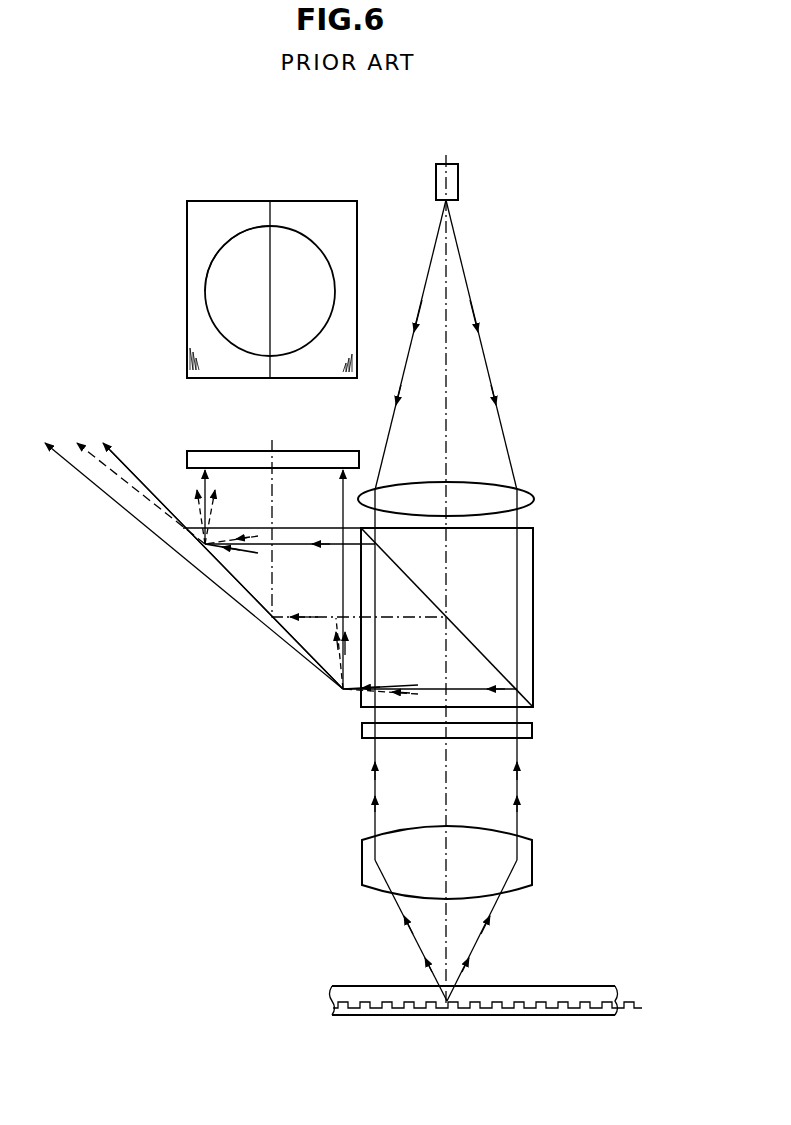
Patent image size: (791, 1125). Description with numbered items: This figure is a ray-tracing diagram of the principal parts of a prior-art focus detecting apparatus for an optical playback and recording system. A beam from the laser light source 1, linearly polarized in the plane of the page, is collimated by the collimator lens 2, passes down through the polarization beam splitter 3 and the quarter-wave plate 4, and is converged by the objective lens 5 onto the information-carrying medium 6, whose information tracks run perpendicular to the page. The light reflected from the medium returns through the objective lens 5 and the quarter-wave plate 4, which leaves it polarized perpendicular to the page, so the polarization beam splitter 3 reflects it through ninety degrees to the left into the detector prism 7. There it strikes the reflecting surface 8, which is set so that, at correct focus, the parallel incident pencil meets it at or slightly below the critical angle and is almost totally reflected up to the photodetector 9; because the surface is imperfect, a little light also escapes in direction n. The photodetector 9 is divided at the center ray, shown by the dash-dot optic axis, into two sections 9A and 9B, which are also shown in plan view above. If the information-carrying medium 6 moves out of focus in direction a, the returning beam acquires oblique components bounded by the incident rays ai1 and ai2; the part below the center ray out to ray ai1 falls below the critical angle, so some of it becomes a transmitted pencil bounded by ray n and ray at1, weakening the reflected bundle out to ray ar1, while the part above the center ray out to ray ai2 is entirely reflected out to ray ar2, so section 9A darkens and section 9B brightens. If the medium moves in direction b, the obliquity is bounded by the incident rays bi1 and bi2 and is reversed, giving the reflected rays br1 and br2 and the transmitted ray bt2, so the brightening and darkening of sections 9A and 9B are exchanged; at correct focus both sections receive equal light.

The laser light source 1 is at (460, 180).
The collimator lens 2 is at (534, 497).
The polarization beam splitter 3 is at (425, 590).
The quarter-wave plate 4 is at (533, 729).
The objective lens 5 is at (528, 858).
The information-carrying medium 6 is at (573, 1008).
The detector prism 7 is at (259, 587).
The reflecting surface 8 is at (226, 566).
The photodetector 9 is at (190, 452).
The photodetector section 9A is at (318, 248).
The photodetector section 9B is at (207, 281).
The direction n is at (113, 448).
The direction a is at (637, 965).
The direction b is at (637, 1002).
The transmitted ray at1 is at (88, 480).
The transmitted ray bt2 is at (126, 497).
The outermost reflected ray ar1 is at (352, 640).
The outermost reflected ray ar2 is at (194, 498).
The reflected ray br1 is at (328, 638).
The reflected ray br2 is at (220, 502).
The incident ray ai1 is at (381, 684).
The incident ray ai2 is at (250, 550).
The incident ray bi1 is at (410, 690).
The incident ray bi2 is at (253, 532).